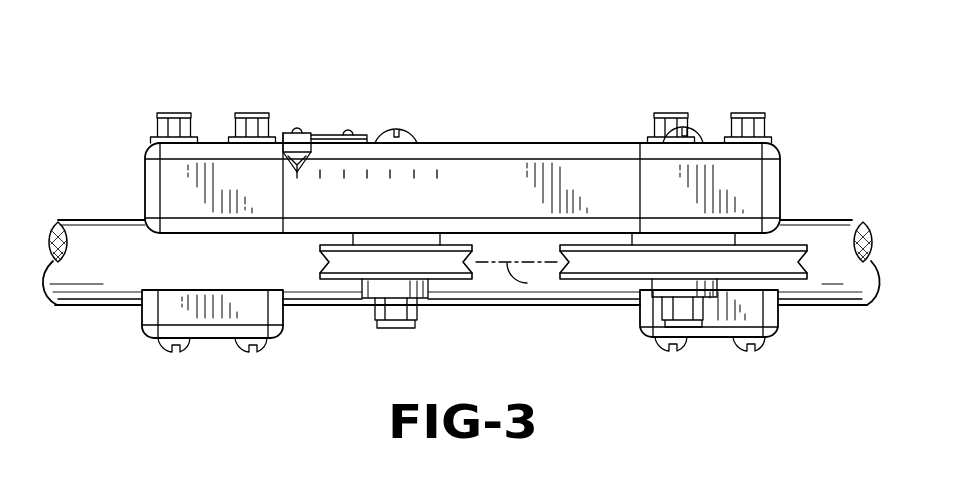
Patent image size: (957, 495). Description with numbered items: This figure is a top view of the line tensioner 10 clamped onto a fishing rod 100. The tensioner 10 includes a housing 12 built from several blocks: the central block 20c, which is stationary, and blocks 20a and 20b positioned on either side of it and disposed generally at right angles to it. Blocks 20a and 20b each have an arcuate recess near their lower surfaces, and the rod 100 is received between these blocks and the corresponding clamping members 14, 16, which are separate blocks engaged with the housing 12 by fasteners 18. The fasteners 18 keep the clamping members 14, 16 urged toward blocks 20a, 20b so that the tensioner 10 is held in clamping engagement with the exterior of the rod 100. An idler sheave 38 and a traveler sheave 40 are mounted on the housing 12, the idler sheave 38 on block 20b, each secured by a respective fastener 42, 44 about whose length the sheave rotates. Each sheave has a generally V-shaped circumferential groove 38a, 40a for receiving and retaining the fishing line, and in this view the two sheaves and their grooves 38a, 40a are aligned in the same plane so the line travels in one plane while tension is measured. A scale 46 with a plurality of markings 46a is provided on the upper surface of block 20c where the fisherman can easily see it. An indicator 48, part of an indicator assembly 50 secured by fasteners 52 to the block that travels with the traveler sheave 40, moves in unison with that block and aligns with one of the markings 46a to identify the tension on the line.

The line tensioner 10 is at (580, 86).
The housing 12 is at (597, 136).
The clamping member 14 is at (283, 338).
The clamping member 16 is at (778, 338).
The fasteners 18 is at (173, 112).
The block 20a is at (146, 184).
The block 20b is at (775, 186).
The block 20c is at (518, 146).
The idler sheave 38 is at (709, 297).
The circumferential groove 38a is at (808, 263).
The traveler sheave 40 is at (397, 294).
The circumferential groove 40a is at (447, 270).
The fastener 42 is at (693, 328).
The fastener 44 is at (392, 330).
The scale 46 is at (405, 131).
The markings 46a is at (388, 176).
The indicator 48 is at (290, 164).
The indicator assembly 50 is at (327, 128).
The fasteners 52 is at (302, 128).
The fishing rod 100 is at (92, 306).